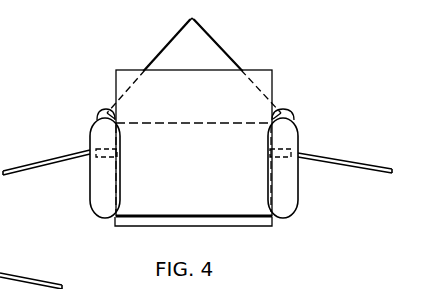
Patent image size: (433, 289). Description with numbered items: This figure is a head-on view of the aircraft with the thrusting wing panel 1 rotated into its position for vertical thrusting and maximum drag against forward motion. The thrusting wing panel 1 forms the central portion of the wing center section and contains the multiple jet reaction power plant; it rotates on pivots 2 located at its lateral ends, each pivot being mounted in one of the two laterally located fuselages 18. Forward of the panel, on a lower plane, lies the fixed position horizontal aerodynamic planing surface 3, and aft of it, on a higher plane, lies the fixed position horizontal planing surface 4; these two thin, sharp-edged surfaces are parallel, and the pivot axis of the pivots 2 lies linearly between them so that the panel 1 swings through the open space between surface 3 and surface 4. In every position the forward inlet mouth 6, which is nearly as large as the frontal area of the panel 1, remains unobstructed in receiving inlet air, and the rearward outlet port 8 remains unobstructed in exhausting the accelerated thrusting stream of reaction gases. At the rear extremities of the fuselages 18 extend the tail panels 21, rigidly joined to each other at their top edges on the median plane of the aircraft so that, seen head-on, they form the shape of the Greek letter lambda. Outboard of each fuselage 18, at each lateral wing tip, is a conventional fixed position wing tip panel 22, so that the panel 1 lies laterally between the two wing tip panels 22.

The thrusting wing panel 1 is at (183, 158).
The pivots 2 is at (282, 148).
The fixed position horizontal aerodynamic planing surface 3 is at (189, 216).
The fixed position horizontal planing surface 4 is at (176, 122).
The forward inlet mouth 6 is at (175, 70).
The rearward outlet port 8 is at (255, 227).
The fuselage 18 is at (100, 184).
The tail panels 21 is at (231, 57).
The wing tip panel 22 is at (346, 158).